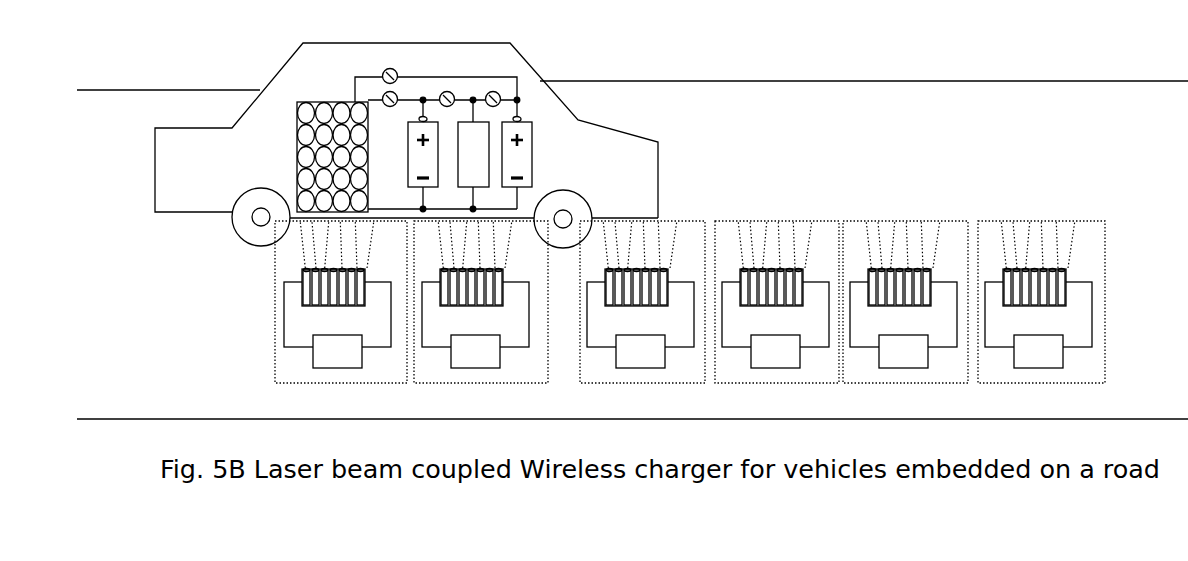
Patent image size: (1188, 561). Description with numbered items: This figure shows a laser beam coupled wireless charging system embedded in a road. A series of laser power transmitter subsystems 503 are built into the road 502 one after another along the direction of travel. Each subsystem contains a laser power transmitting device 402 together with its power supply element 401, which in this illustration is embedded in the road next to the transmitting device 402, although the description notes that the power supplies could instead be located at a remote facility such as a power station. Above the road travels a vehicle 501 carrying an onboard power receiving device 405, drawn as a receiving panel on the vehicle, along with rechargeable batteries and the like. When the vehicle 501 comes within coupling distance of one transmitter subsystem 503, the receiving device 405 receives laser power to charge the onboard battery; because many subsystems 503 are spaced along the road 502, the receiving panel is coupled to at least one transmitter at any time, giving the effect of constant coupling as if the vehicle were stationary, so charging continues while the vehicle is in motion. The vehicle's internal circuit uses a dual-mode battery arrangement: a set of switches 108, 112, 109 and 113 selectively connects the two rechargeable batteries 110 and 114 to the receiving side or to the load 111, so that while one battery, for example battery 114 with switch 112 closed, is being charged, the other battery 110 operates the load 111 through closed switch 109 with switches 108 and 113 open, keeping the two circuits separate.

The vehicle 501 is at (228, 127).
The road 502 is at (968, 93).
The onboard power receiving device 405 is at (297, 163).
The switch 108 is at (385, 92).
The switch 112 is at (386, 68).
The switch 109 is at (447, 91).
The switch 113 is at (493, 91).
The battery 110 is at (410, 162).
The load 111 is at (470, 173).
The rechargeable battery 114 is at (523, 152).
The power supply element 401 is at (330, 337).
The laser power transmitting device 402 is at (346, 295).
The laser power transmitter subsystem 503 is at (690, 320).